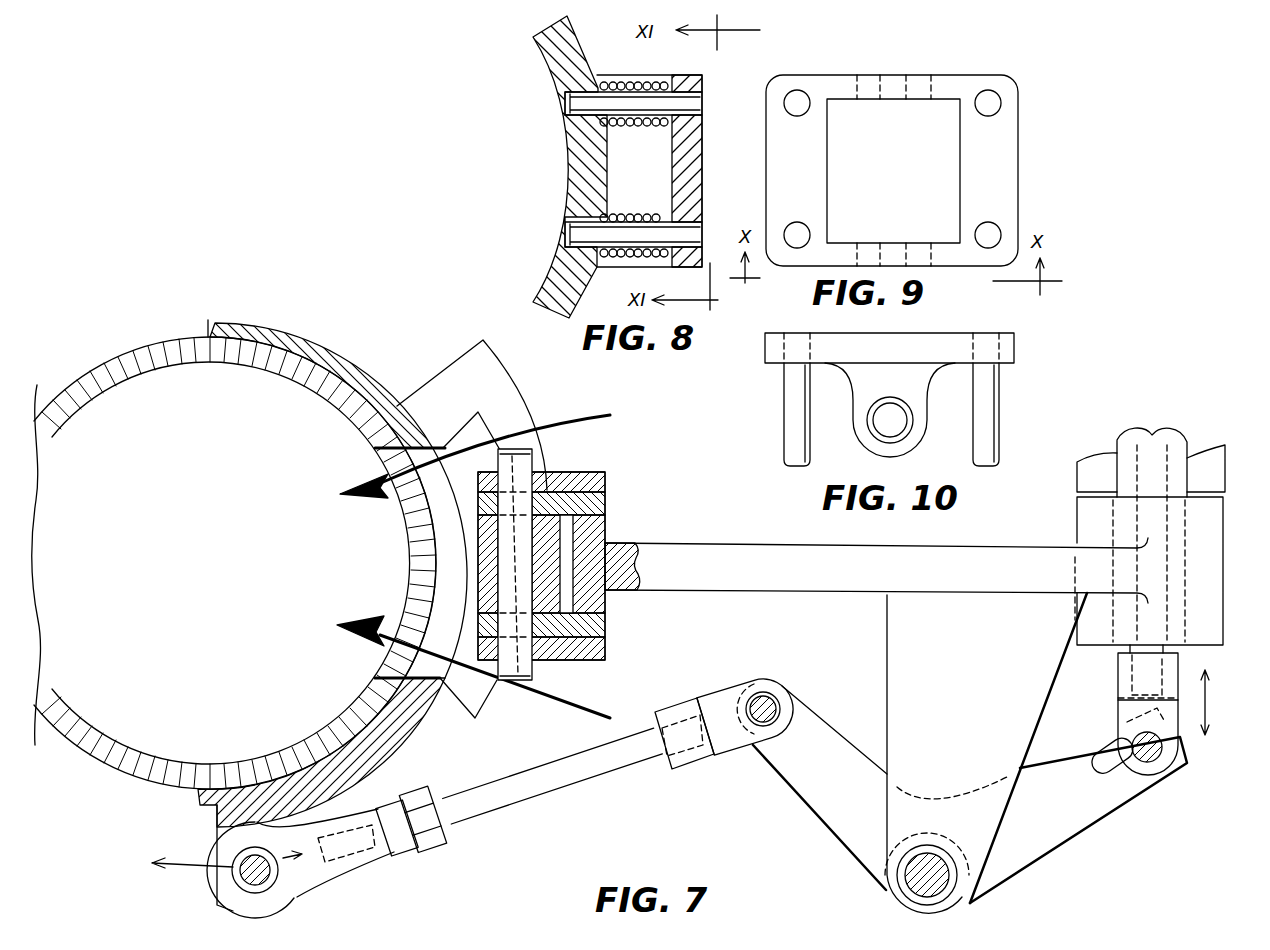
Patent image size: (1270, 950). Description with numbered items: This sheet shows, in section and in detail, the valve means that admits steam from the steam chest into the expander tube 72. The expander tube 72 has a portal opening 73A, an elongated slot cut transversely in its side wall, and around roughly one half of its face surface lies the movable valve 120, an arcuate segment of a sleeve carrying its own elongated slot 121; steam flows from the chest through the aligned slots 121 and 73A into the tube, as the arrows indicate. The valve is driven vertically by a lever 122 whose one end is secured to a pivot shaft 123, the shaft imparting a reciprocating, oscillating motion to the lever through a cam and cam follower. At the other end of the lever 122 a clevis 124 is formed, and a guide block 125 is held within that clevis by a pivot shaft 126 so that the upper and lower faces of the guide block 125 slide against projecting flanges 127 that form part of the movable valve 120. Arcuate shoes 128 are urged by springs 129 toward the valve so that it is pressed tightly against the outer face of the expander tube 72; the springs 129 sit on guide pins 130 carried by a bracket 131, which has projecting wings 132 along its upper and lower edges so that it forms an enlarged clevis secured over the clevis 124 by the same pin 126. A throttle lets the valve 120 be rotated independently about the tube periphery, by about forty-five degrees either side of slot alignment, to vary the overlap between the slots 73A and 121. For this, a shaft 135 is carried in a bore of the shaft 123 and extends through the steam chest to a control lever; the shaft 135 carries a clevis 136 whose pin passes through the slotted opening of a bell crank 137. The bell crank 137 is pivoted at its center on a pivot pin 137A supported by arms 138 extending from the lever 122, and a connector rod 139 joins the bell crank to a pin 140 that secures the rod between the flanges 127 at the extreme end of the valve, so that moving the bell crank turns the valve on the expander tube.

In FIG. 7, the expander tube 72 is at (172, 335).
In FIG. 7, the portal opening 73A is at (382, 676).
In FIG. 7, the movable valve 120 is at (335, 355).
In FIG. 7, the elongated slot 121 is at (410, 668).
In FIG. 7, the lever 122 is at (840, 545).
In FIG. 7, the pivot shaft 123 is at (1188, 450).
In FIG. 7, the clevis 124 is at (608, 515).
In FIG. 7, the guide block 125 is at (578, 600).
In FIG. 7, the pivot shaft 126 is at (535, 455).
In FIG. 7, the projecting flanges 127 is at (518, 385).
In FIG. 8, the arcuate shoes 128 is at (563, 150).
In FIG. 8, the springs 129 is at (626, 212).
In FIG. 8, the guide pins 130 is at (703, 101).
In FIG. 9, the guide pins 130 is at (809, 109).
In FIG. 10, the guide pins 130 is at (782, 378).
In FIG. 8, the bracket 131 is at (703, 145).
In FIG. 9, the bracket 131 is at (1018, 170).
In FIG. 7, the projecting wings 132 is at (608, 478).
In FIG. 10, the projecting wings 132 is at (913, 442).
In FIG. 7, the shaft 135 is at (1223, 647).
In FIG. 7, the clevis 136 is at (1182, 738).
In FIG. 7, the bell crank 137 is at (1097, 822).
In FIG. 7, the pivot pin 137A is at (935, 893).
In FIG. 7, the arms 138 is at (965, 695).
In FIG. 7, the connector rod 139 is at (575, 787).
In FIG. 7, the pin 140 is at (262, 883).